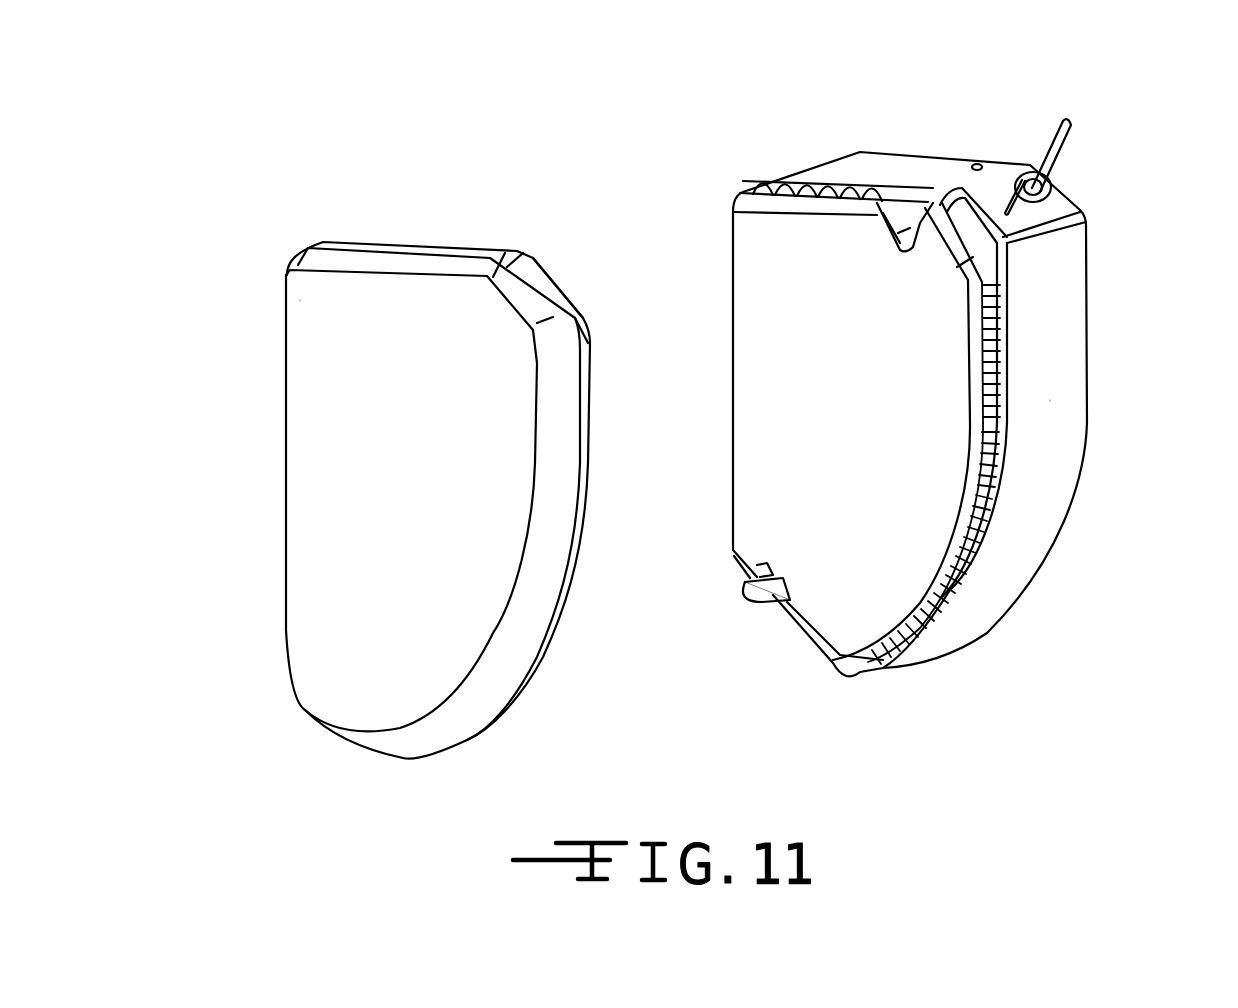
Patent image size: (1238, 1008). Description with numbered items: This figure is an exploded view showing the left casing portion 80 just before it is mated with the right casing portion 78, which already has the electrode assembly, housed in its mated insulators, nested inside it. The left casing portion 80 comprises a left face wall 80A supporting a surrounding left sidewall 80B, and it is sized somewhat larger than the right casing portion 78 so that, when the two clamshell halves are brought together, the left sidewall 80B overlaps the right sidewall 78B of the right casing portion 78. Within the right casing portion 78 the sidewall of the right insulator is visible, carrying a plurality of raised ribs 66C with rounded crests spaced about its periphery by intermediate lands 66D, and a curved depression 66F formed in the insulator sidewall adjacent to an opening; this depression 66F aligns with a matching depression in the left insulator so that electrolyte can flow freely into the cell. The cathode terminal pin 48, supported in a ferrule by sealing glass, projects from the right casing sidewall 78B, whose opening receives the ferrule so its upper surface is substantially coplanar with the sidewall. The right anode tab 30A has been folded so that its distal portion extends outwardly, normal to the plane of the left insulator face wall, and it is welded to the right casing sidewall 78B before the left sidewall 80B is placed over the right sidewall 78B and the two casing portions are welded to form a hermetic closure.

The left casing portion 80 is at (402, 245).
The left face wall 80A is at (388, 468).
The left sidewall 80B is at (540, 290).
The right casing portion 78 is at (892, 150).
The right sidewall 78B is at (1048, 328).
The curved depression 66F is at (917, 203).
The intermediate lands 66D is at (980, 392).
The raised ribs 66C is at (982, 457).
The cathode terminal pin 48 is at (1067, 140).
The right anode tab 30A is at (772, 590).